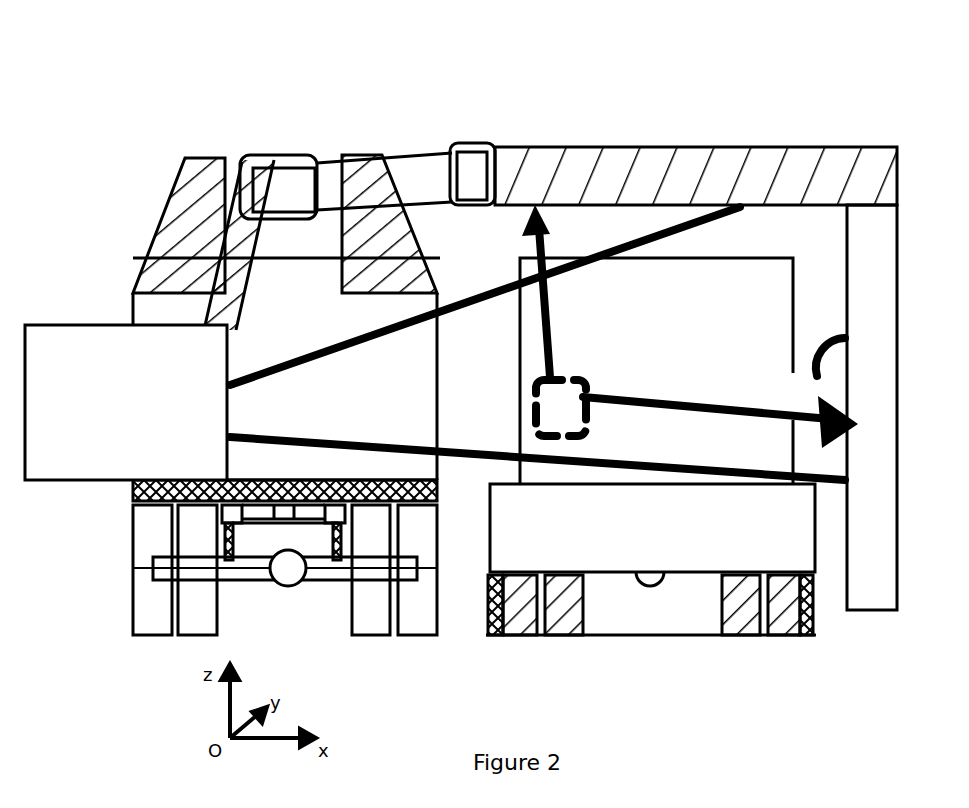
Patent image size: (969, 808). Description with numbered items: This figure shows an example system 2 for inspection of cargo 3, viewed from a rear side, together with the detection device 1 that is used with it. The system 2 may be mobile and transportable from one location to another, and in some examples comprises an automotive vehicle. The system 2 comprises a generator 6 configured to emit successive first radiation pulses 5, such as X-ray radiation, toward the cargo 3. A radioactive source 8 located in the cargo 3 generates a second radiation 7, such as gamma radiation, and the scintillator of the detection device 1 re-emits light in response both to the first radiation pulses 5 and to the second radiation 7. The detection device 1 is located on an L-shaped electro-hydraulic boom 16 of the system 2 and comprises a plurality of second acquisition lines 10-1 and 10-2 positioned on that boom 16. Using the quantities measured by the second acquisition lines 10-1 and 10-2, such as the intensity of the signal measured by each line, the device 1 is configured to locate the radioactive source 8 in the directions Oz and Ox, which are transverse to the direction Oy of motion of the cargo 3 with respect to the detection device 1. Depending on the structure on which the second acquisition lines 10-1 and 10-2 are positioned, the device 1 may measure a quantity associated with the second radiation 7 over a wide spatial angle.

The detection device 1 is at (775, 100).
The system for inspection 2 is at (126, 228).
The cargo 3 is at (650, 357).
The first radiation pulses 5 is at (285, 408).
The generator 6 is at (108, 413).
The second radiation 7 is at (532, 250).
The radioactive source 8 is at (549, 414).
The second acquisition line 10-1 is at (806, 374).
The second acquisition line 10-2 is at (750, 210).
The electro-hydraulic boom 16 is at (672, 147).